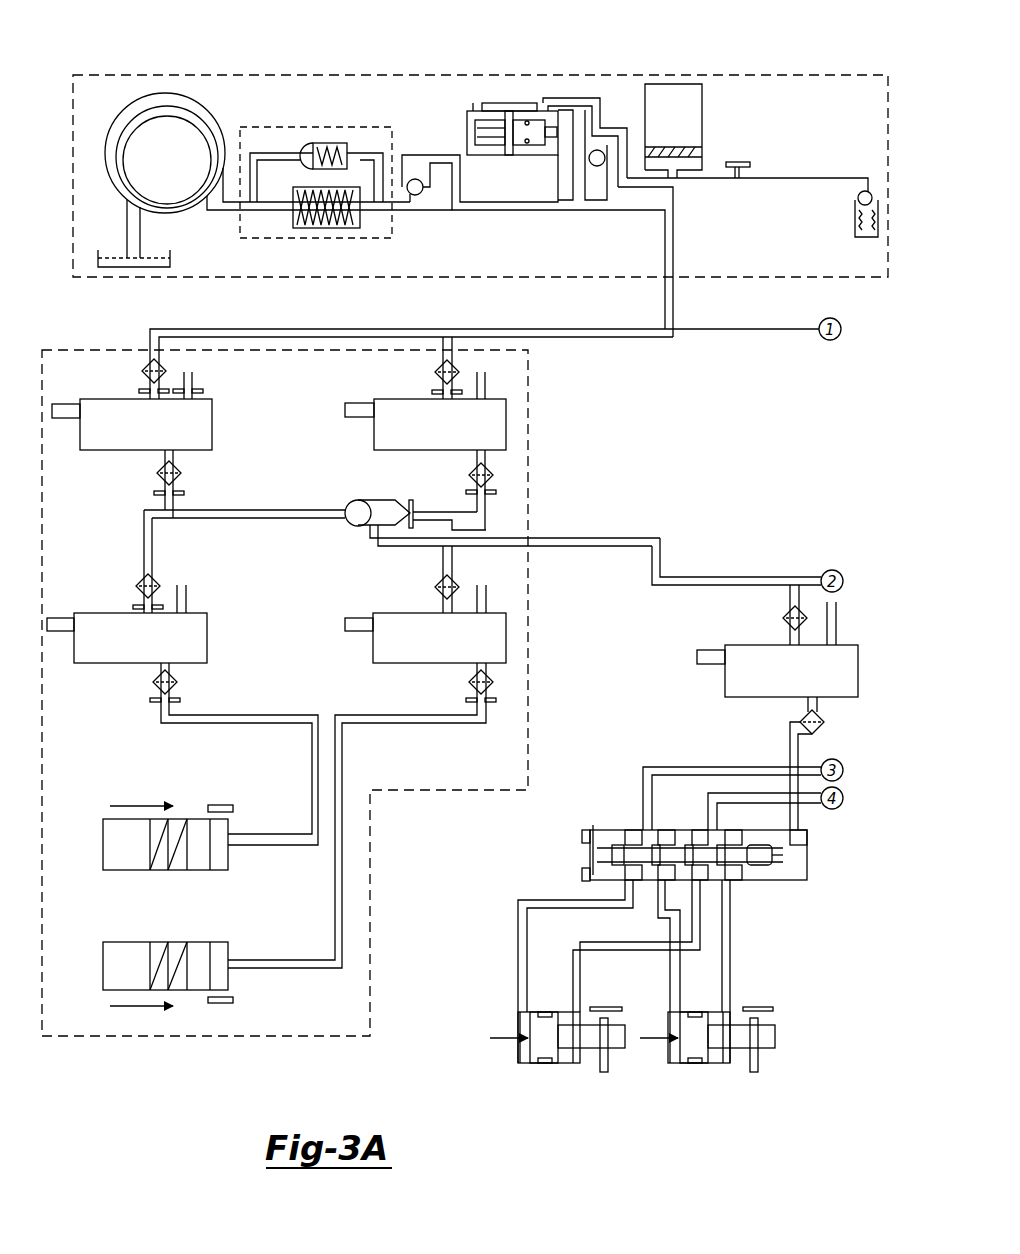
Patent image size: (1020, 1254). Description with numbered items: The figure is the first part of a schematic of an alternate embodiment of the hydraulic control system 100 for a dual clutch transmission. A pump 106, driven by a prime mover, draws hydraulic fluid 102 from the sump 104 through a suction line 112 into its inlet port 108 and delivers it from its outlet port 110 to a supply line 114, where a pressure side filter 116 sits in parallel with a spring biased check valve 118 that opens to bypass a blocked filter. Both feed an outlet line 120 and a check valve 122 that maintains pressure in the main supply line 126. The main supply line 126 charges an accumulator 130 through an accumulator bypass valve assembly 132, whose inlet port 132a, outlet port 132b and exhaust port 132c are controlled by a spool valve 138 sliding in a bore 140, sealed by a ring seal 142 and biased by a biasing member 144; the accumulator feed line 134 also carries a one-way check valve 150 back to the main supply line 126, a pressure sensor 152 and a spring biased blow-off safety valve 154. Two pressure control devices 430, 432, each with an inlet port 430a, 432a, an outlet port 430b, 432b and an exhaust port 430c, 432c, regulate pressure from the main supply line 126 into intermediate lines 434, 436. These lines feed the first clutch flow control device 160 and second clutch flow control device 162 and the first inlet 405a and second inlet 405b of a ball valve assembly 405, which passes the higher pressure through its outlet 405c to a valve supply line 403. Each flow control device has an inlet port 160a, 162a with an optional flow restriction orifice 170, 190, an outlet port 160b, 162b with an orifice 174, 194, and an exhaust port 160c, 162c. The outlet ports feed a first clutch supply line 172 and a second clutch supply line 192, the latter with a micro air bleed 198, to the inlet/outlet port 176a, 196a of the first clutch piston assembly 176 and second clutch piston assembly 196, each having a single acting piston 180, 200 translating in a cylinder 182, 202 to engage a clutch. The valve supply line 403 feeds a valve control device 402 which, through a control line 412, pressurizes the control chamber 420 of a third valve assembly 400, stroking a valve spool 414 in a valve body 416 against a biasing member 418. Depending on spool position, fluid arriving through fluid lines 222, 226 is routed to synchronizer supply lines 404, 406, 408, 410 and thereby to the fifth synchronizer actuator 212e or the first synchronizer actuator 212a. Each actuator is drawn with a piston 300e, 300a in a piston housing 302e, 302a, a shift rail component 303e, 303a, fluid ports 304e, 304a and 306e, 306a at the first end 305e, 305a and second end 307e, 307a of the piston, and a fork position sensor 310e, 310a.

The hydraulic control system 100 is at (778, 64).
The hydraulic fluid 102 is at (114, 245).
The sump 104 is at (172, 258).
The pump 106 is at (118, 118).
The inlet port 108 is at (125, 206).
The outlet port 110 is at (243, 178).
The suction line 112 is at (142, 228).
The supply line 114 is at (263, 220).
The pressure side filter 116 is at (327, 229).
The spring biased check valve 118 is at (330, 142).
The outlet line 120 is at (398, 212).
The check valve 122 is at (424, 198).
The main supply line 126 is at (736, 182).
The accumulator 130 is at (705, 110).
The accumulator bypass valve assembly 132 is at (486, 98).
The inlet port 132a is at (562, 165).
The outlet port 132b is at (537, 104).
The exhaust port 132c is at (470, 100).
The accumulator feed line 134 is at (614, 128).
The spool valve 138 is at (514, 156).
The bore 140 is at (500, 118).
The ring seal 142 is at (535, 143).
The biasing member 144 is at (489, 135).
The one-way check valve 150 is at (597, 150).
The pressure sensor 152 is at (737, 160).
The spring biased blow-off safety valve 154 is at (852, 225).
The first clutch flow control device 160 is at (209, 655).
The inlet port 160a is at (140, 604).
The outlet port 160b is at (160, 668).
The exhaust port 160c is at (188, 604).
The second clutch flow control device 162 is at (372, 660).
The inlet port 162a is at (440, 605).
The outlet port 162b is at (488, 672).
The exhaust port 162c is at (490, 605).
The flow restriction orifice 170 is at (156, 585).
The first clutch supply line 172 is at (268, 715).
The flow restriction orifice 174 is at (152, 703).
The first clutch piston assembly 176 is at (100, 846).
The inlet/outlet port 176a is at (230, 846).
The single acting piston 180 is at (197, 823).
The cylinder 182 is at (231, 832).
The flow restriction orifice 190 is at (455, 590).
The second clutch supply line 192 is at (375, 715).
The flow restriction orifice 194 is at (496, 702).
The second clutch piston assembly 196 is at (100, 969).
The inlet/outlet port 196a is at (230, 969).
The micro air bleed 198 is at (343, 760).
The single acting piston 200 is at (195, 985).
The cylinder 202 is at (231, 958).
The first synchronizer actuator 212a is at (668, 1066).
The fifth synchronizer actuator 212e is at (518, 1066).
The fluid line 222 is at (778, 767).
The fluid line 226 is at (728, 793).
The piston 300a is at (702, 1010).
The piston 300e is at (552, 1010).
The piston housing 302a is at (680, 1066).
The seal 302e is at (530, 1066).
The shift rail component 303a is at (755, 1073).
The flange 303e is at (604, 1073).
The fluid port 304a is at (672, 1010).
The housing wall 304e is at (522, 1010).
The first end 305a is at (647, 1052).
The fluid inlet 305e is at (490, 1037).
The fluid port 306a is at (727, 1010).
The housing wall 306e is at (577, 1010).
The second end 307a is at (716, 1066).
The piston rod 307e is at (566, 1066).
The fork position sensor 310a is at (775, 1009).
The retainer 310e is at (620, 1010).
The third valve assembly 400 is at (535, 852).
The valve control device 402 is at (723, 690).
The valve supply line 403 is at (640, 540).
The synchronizer supply line 404 is at (516, 920).
The ball valve assembly 405 is at (345, 528).
The first inlet 405a is at (355, 500).
The second inlet 405b is at (411, 498).
The outlet 405c is at (376, 550).
The synchronizer supply line 406 is at (668, 938).
The synchronizer supply line 408 is at (575, 953).
The synchronizer supply line 410 is at (733, 945).
The control line 412 is at (800, 750).
The valve spool 414 is at (760, 867).
The valve body 416 is at (582, 838).
The biasing member 418 is at (582, 873).
The control chamber 420 is at (810, 856).
The pressure control device 430 is at (213, 435).
The inlet port 430a is at (146, 388).
The outlet port 430b is at (160, 458).
The exhaust port 430c is at (194, 388).
The pressure control device 432 is at (372, 440).
The inlet port 432a is at (440, 388).
The outlet port 432b is at (486, 458).
The exhaust port 432c is at (488, 388).
The intermediate line 434 is at (275, 510).
The intermediate line 436 is at (464, 531).